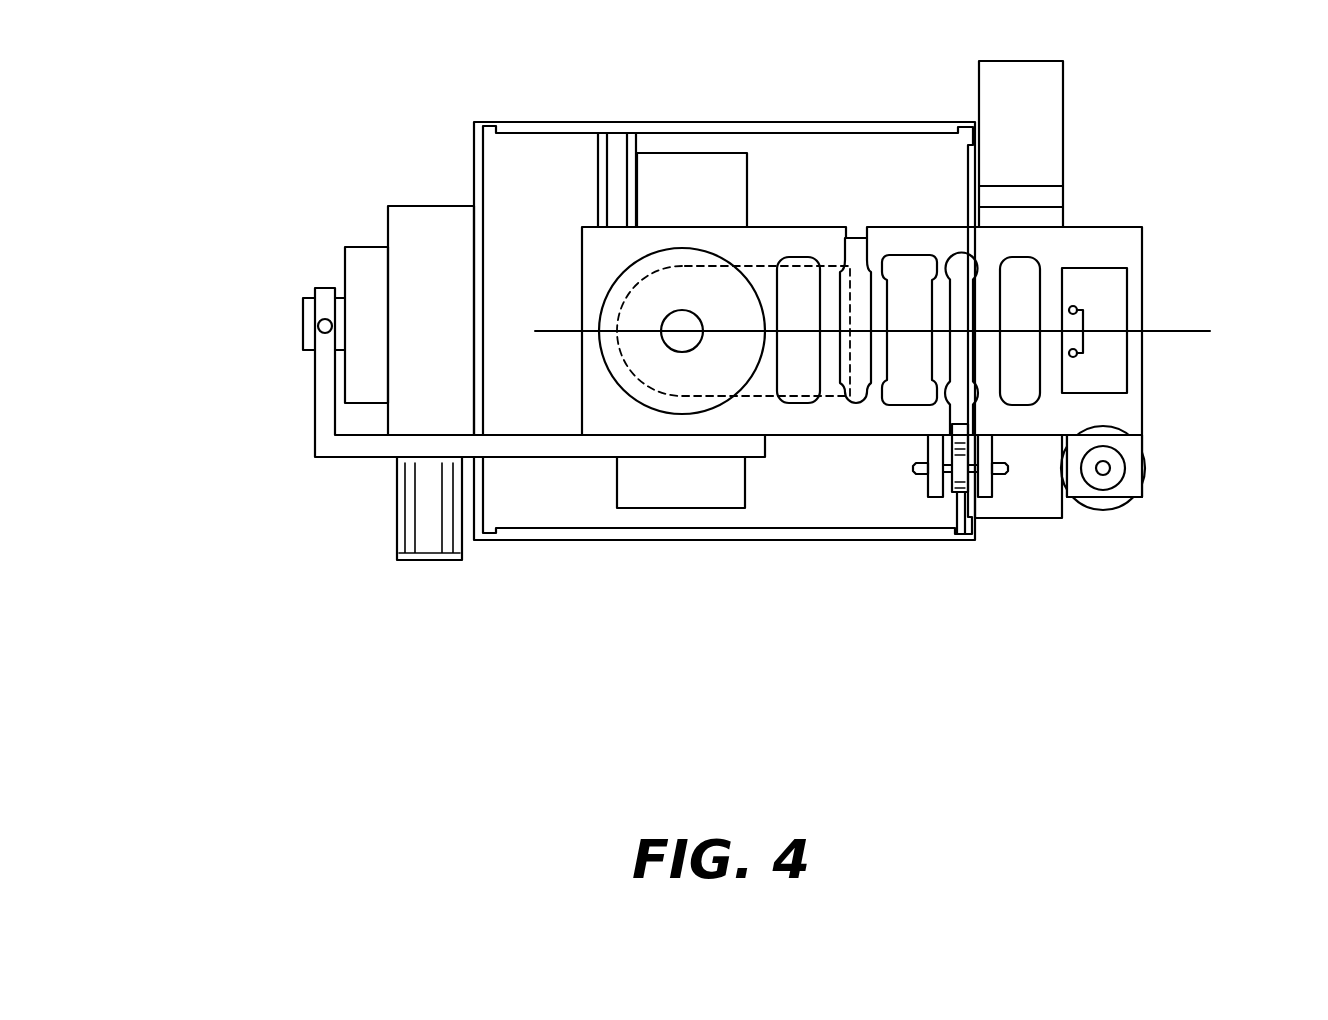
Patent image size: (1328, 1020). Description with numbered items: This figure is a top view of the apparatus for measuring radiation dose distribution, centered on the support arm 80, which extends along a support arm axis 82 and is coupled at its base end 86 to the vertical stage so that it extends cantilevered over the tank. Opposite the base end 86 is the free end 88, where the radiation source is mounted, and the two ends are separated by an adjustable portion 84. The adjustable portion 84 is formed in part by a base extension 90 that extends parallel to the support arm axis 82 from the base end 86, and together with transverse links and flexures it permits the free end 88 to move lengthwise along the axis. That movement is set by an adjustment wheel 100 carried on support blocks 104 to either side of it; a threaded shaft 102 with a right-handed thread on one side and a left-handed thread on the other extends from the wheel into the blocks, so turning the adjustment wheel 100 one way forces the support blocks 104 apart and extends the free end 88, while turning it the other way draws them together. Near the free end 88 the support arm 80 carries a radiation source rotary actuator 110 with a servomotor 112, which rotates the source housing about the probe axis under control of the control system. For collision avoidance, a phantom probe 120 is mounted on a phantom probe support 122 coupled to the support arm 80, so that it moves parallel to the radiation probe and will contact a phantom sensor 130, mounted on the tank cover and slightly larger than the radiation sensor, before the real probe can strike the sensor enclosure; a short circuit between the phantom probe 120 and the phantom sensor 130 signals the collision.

The support arm 80 is at (787, 487).
The support arm axis 82 is at (1190, 333).
The adjustable portion 84 is at (872, 212).
The base end 86 is at (1168, 280).
The free end 88 is at (557, 238).
The base extension 90 is at (893, 238).
The adjustment wheel 100 is at (960, 492).
The threaded shaft 102 is at (1003, 472).
The support block 104 is at (935, 488).
The radiation source rotary actuator 110 is at (597, 421).
The servomotor 112 is at (618, 155).
The phantom probe 120 is at (313, 332).
The phantom probe support 122 is at (345, 445).
The phantom sensor 130 is at (303, 308).